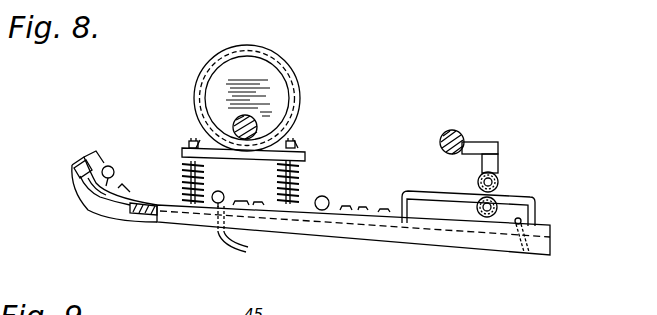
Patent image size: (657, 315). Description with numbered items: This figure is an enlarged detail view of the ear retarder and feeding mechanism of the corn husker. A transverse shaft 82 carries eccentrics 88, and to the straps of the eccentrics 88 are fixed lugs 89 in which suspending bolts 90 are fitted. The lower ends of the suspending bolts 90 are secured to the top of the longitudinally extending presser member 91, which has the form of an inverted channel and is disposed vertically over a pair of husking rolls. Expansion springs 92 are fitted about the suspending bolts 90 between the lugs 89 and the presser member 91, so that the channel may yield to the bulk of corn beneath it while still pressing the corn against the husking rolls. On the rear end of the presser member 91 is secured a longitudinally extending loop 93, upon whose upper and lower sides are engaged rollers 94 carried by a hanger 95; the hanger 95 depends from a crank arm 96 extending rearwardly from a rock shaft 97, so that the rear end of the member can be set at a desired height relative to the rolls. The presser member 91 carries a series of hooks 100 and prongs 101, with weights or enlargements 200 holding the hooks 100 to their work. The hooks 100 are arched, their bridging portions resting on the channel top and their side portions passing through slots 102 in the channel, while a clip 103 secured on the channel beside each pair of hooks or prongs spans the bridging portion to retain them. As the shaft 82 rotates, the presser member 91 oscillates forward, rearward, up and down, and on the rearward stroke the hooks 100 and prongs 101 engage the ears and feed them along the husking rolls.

The transverse shaft 82 is at (256, 128).
The eccentrics 88 is at (280, 106).
The lugs 89 is at (190, 150).
The suspending bolts 90 is at (194, 141).
The presser member 91 is at (432, 243).
The expansion springs 92 is at (182, 180).
The loop 93 is at (518, 195).
The rollers 94 is at (494, 205).
The hanger 95 is at (497, 156).
The crank arm 96 is at (476, 142).
The rock shaft 97 is at (450, 131).
The hooks 100 is at (84, 206).
The prongs 101 is at (523, 252).
The slots 102 is at (104, 166).
The clip 103 is at (122, 186).
The weights or enlargements 200 is at (110, 164).